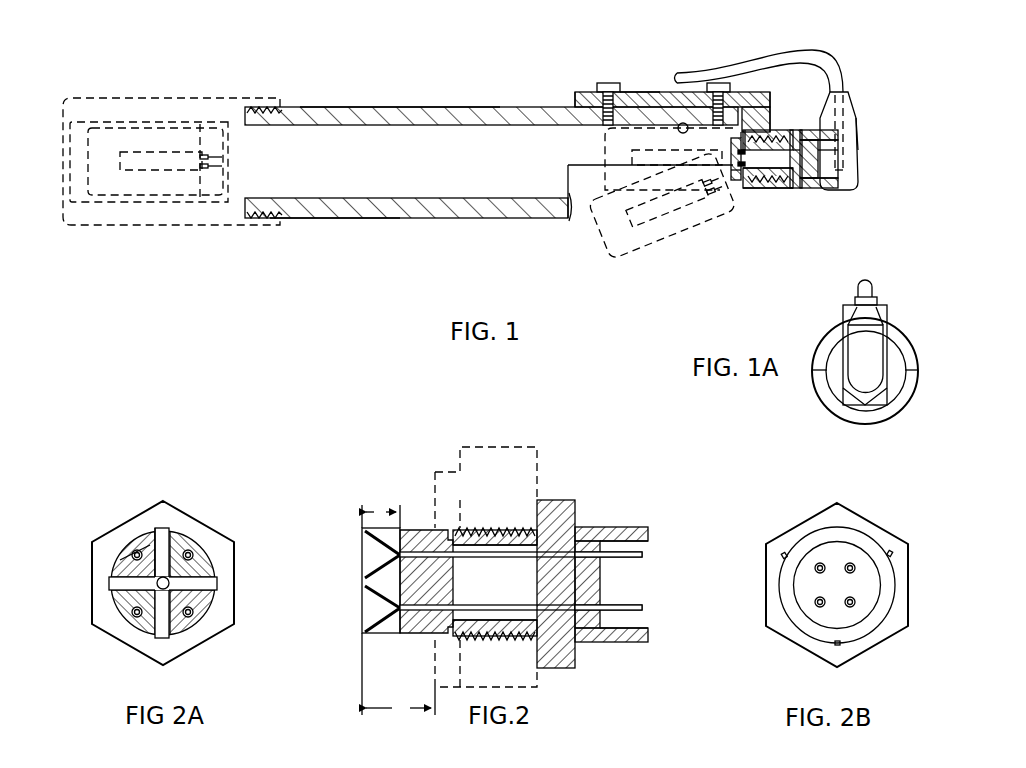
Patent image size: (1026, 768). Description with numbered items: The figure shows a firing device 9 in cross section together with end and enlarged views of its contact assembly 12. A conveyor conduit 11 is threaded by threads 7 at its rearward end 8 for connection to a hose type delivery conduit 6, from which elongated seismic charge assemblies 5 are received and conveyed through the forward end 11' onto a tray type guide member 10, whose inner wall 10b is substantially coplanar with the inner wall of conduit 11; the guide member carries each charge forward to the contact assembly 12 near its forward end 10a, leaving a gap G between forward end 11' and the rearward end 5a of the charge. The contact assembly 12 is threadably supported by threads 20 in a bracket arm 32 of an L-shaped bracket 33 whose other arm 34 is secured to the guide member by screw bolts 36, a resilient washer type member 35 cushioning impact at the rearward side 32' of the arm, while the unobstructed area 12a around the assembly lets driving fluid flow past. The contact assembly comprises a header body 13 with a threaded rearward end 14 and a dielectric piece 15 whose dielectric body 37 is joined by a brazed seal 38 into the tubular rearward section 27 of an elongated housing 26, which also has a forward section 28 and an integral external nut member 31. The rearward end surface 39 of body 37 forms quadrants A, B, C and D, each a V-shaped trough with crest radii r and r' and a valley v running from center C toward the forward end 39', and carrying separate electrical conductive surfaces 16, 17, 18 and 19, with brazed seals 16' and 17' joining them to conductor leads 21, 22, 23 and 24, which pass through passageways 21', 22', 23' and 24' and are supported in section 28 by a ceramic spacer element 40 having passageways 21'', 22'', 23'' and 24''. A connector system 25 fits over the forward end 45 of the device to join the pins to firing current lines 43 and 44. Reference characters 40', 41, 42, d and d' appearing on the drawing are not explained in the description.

In FIG. 1, the seismic charge assembly 5 is at (146, 147).
In FIG. 1, the rearward end of seismic charge assembly 5a is at (598, 258).
In FIG. 1, the hose type delivery conduit 6 is at (148, 100).
In FIG. 1, the threads 7 is at (288, 214).
In FIG. 1, the rearward end of conduit 8 is at (246, 127).
In FIG. 1, the firing device 9 is at (386, 106).
In FIG. 1, the guide member 10 is at (655, 100).
In FIG. 1, the forward end of guide member 10a is at (742, 130).
In FIG. 1, the inner wall of guide member 10b is at (684, 123).
In FIG. 1, the conduit 11 is at (400, 87).
In FIG. 1, the forward end of conduit 11' is at (555, 223).
In FIG. 1, the contact assembly 12 is at (767, 190).
In FIG. 2, the contact assembly 12 is at (552, 641).
In FIG. 1A, the unobstructed area 12a is at (897, 369).
In FIG. 1, the header body 13 is at (776, 190).
In FIG. 2, the header body 13 is at (495, 634).
In FIG. 1, the rearward end of header body 14 is at (755, 190).
In FIG. 2, the rearward end of header body 14 is at (455, 532).
In FIG. 1, the dielectric piece 15 is at (733, 151).
In FIG. 2, the dielectric piece 15 is at (398, 613).
In FIG. 1, the electrical conductive surface 16 is at (733, 210).
In FIG. 2A, the electrical conductive surface 16 is at (95, 630).
In FIG. 2, the electrical conductive surface 16 is at (364, 616).
In FIG. 2, the brazed seal 16' is at (421, 649).
In FIG. 1, the electrical conductive surface 17 is at (727, 105).
In FIG. 2A, the electrical conductive surface 17 is at (135, 525).
In FIG. 2, the electrical conductive surface 17 is at (364, 575).
In FIG. 2, the brazed seal 17' is at (406, 508).
In FIG. 2A, the electrical conductive surface 18 is at (200, 548).
In FIG. 2A, the electrical conductive surface 19 is at (200, 605).
In FIG. 1, the threads 20 is at (762, 142).
In FIG. 2, the threads 20 is at (500, 533).
In FIG. 1, the electrical conductor lead 21 is at (821, 189).
In FIG. 2A, the electrical conductor lead 21 is at (126, 638).
In FIG. 2, the electrical conductor lead 21 is at (518, 607).
In FIG. 2A, the passageway 21' is at (105, 641).
In FIG. 2, the passageway 21' is at (446, 641).
In FIG. 2B, the spacer passageway 21'' is at (780, 602).
In FIG. 1, the electrical conductor lead 22 is at (771, 124).
In FIG. 2A, the electrical conductor lead 22 is at (99, 541).
In FIG. 2A, the passageway 22' is at (106, 526).
In FIG. 2, the spacer passageway 22'' is at (422, 519).
In FIG. 2B, the spacer passageway 22'' is at (800, 535).
In FIG. 2A, the electrical conductor lead 23 is at (202, 529).
In FIG. 2A, the passageway 23' is at (233, 538).
In FIG. 2B, the spacer passageway 23'' is at (879, 535).
In FIG. 2A, the electrical conductor lead 24 is at (193, 643).
In FIG. 2A, the passageway 24' is at (217, 641).
In FIG. 2B, the spacer passageway 24'' is at (896, 613).
In FIG. 1, the connector system 25 is at (858, 150).
In FIG. 1A, the connector system 25 is at (876, 351).
In FIG. 1, the elongated housing 26 is at (796, 190).
In FIG. 2, the elongated housing 26 is at (541, 530).
In FIG. 1, the rearward section of housing 27 is at (818, 160).
In FIG. 2, the rearward section of housing 27 is at (585, 630).
In FIG. 1, the forward section of housing 28 is at (838, 133).
In FIG. 2, the forward section of housing 28 is at (610, 535).
In FIG. 1, the external nut member 31 is at (810, 190).
In FIG. 1A, the external nut member 31 is at (882, 390).
In FIG. 2A, the external nut member 31 is at (180, 520).
In FIG. 2, the external nut member 31 is at (572, 512).
In FIG. 2B, the external nut member 31 is at (843, 512).
In FIG. 1, the bracket arm 32 is at (759, 80).
In FIG. 1A, the bracket arm 32 is at (897, 300).
In FIG. 2, the bracket arm 32 is at (502, 565).
In FIG. 2, the rearward side of arm 32' is at (445, 444).
In FIG. 1, the L-shaped bracket 33 is at (638, 91).
In FIG. 1, the bracket arm 34 is at (590, 90).
In FIG. 1, the resilient washer type member 35 is at (752, 130).
In FIG. 2, the resilient washer type member 35 is at (445, 471).
In FIG. 1, the screw bolts 36 is at (608, 82).
In FIG. 1, the dielectric body 37 is at (743, 190).
In FIG. 2A, the dielectric body 37 is at (163, 583).
In FIG. 2, the dielectric body 37 is at (380, 586).
In FIG. 2, the brazed seal 38 is at (456, 530).
In FIG. 2A, the rearward end surface of dielectric body 39 is at (175, 551).
In FIG. 2, the rearward end surface of dielectric body 39 is at (362, 554).
In FIG. 2, the forward end of dielectric body 39' is at (472, 636).
In FIG. 2, the ceramic spacer element 40 is at (639, 564).
In FIG. 2B, the ceramic spacer element 40 is at (859, 586).
In FIG. 2, the socket recess edge 40' is at (623, 656).
In FIG. 2A, the cross bar 41 is at (158, 632).
In FIG. 2A, the cross bar 42 is at (160, 528).
In FIG. 1, the firing current line 43 is at (846, 96).
In FIG. 1, the firing current line 44 is at (856, 108).
In FIG. 1, the forward end of firing device 45 is at (822, 184).
In FIG. 2, the forward end of firing device 45 is at (630, 593).
In FIG. 2A, the quadrant A is at (112, 586).
In FIG. 2, the quadrant A is at (370, 567).
In FIG. 2A, the quadrant B is at (112, 580).
In FIG. 2, the quadrant B is at (370, 619).
In FIG. 2A, the quadrant C is at (217, 580).
In FIG. 2A, the quadrant D is at (213, 586).
In FIG. 1, the gap G is at (577, 220).
In FIG. 2, the dimension d is at (381, 514).
In FIG. 2, the dimension d prime d' is at (398, 675).
In FIG. 2A, the radius r is at (80, 595).
In FIG. 2A, the radius r' is at (167, 647).
In FIG. 2A, the valley v is at (114, 644).